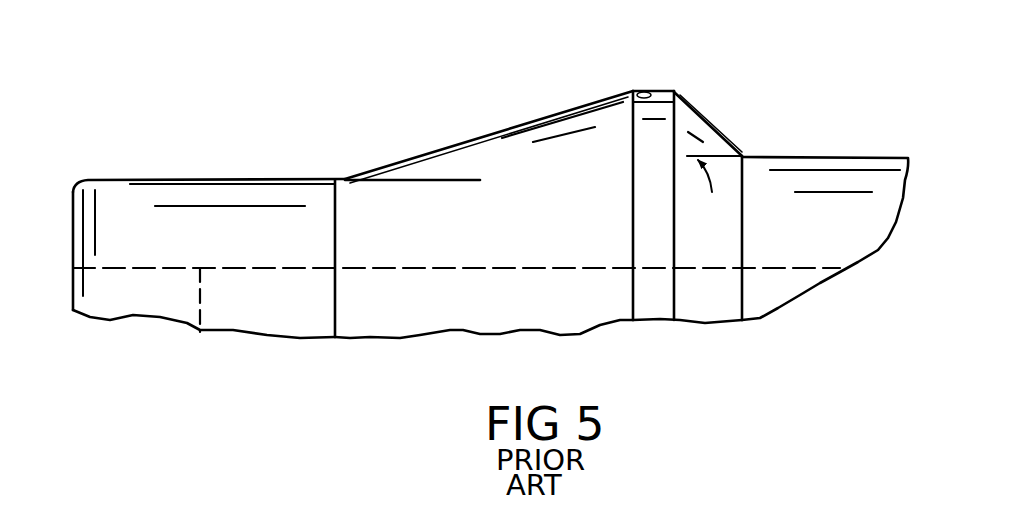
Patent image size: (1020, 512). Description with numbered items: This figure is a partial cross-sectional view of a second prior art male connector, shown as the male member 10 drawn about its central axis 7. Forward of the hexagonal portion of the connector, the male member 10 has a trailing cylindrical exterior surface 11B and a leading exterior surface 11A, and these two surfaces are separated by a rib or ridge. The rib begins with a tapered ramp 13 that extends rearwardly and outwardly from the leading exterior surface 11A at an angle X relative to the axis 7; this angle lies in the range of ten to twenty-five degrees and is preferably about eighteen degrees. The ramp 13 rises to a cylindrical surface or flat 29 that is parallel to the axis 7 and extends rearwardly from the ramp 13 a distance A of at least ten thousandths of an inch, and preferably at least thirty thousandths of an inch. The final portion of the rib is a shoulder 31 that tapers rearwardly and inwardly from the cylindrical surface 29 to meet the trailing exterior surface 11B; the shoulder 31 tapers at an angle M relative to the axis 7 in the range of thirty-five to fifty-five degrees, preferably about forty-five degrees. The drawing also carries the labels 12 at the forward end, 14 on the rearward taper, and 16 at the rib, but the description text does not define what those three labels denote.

The male member 10 is at (310, 115).
The leading exterior surface 11A is at (197, 178).
The trailing cylindrical exterior surface 11B is at (833, 157).
The pipe end 12 is at (73, 217).
The axis 7 is at (199, 334).
The tapered ramp 13 is at (514, 125).
The second tapered wall 14 is at (680, 92).
The connecting ring 16 is at (633, 92).
The cylindrical surface or flat 29 is at (633, 91).
The shoulder 31 is at (692, 99).
The shoulder taper angle M is at (715, 119).
The ramp angle X is at (463, 220).
The flat length A is at (722, 43).